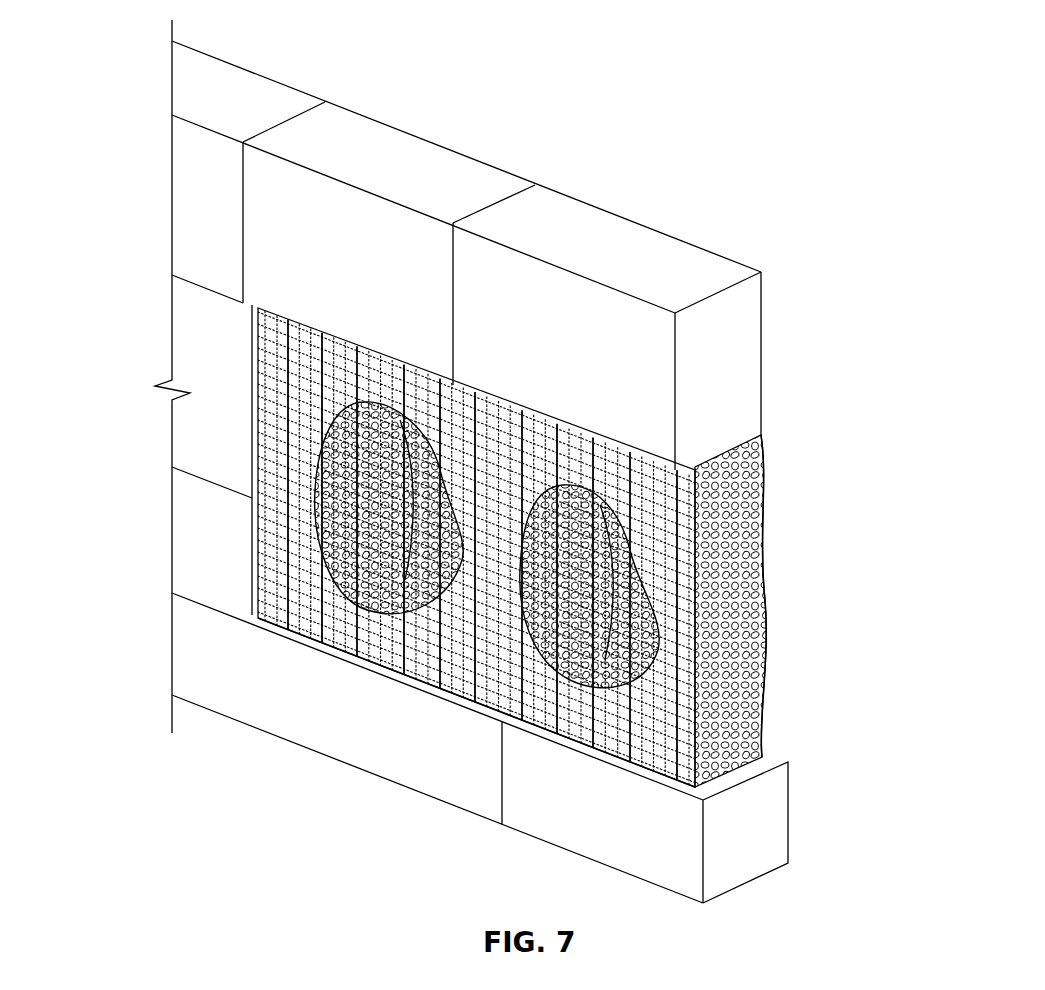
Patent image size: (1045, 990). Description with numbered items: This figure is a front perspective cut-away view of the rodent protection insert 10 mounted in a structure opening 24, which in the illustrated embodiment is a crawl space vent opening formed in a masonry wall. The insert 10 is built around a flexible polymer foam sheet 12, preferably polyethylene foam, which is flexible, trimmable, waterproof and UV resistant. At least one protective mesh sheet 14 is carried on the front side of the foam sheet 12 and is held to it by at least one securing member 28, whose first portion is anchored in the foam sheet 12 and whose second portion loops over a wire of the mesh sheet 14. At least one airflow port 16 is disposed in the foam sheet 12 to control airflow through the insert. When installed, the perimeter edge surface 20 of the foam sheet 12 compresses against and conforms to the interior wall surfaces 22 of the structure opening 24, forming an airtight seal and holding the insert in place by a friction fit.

The rodent protection insert 10 is at (665, 790).
The flexible polymer foam sheet 12 is at (762, 583).
The protective mesh sheet 14 is at (263, 530).
The airflow port 16 is at (377, 537).
The perimeter edge surface 20 is at (732, 500).
The interior wall surfaces 22 is at (254, 368).
The structure opening 24 is at (267, 625).
The securing member 28 is at (283, 474).